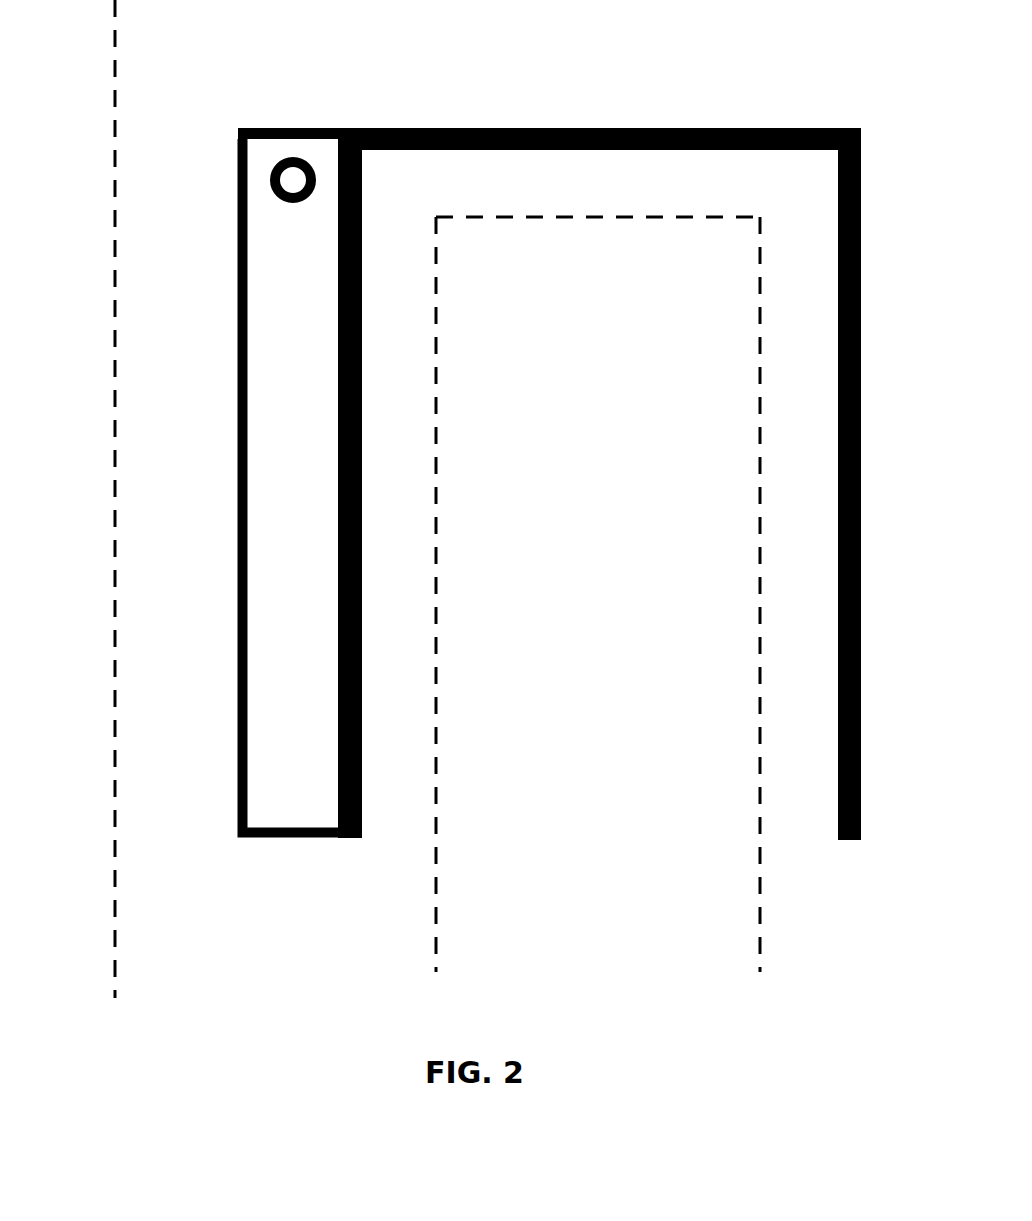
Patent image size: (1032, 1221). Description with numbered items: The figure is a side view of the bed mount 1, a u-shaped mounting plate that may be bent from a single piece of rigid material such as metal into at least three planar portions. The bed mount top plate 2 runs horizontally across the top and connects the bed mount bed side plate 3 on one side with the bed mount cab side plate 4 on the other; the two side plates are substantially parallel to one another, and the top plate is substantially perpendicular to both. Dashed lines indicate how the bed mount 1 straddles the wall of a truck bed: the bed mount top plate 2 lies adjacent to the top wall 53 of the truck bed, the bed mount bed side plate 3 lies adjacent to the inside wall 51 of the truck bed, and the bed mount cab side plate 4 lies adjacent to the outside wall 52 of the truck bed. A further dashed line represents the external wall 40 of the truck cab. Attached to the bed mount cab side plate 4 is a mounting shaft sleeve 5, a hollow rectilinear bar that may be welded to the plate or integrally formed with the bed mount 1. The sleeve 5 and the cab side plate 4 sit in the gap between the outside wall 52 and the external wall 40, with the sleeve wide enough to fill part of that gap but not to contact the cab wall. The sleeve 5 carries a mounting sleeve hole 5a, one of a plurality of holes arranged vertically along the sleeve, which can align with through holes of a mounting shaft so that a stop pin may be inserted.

The bed mount 1 is at (828, 120).
The bed mount top plate 2 is at (653, 128).
The bed mount bed side plate 3 is at (861, 558).
The bed mount cab side plate 4 is at (362, 788).
The mounting shaft sleeve 5 is at (238, 767).
The mounting sleeve hole 5a is at (287, 160).
The external wall of vehicle cab 40 is at (113, 925).
The inside wall of vehicle bed 51 is at (760, 920).
The outside wall of vehicle bed 52 is at (438, 915).
The top wall of vehicle bed 53 is at (532, 220).